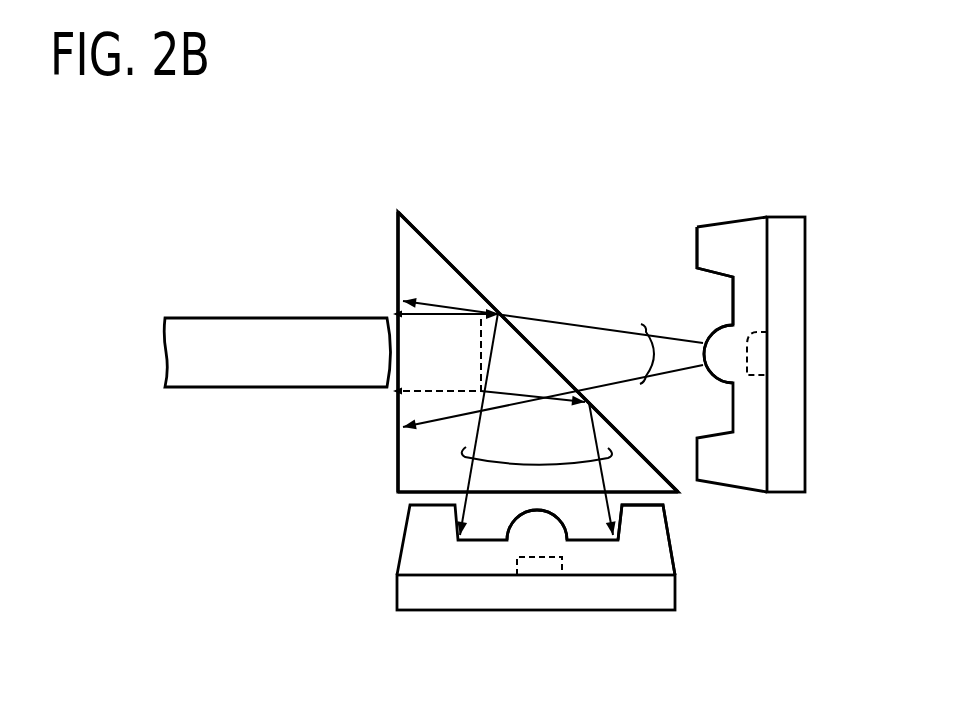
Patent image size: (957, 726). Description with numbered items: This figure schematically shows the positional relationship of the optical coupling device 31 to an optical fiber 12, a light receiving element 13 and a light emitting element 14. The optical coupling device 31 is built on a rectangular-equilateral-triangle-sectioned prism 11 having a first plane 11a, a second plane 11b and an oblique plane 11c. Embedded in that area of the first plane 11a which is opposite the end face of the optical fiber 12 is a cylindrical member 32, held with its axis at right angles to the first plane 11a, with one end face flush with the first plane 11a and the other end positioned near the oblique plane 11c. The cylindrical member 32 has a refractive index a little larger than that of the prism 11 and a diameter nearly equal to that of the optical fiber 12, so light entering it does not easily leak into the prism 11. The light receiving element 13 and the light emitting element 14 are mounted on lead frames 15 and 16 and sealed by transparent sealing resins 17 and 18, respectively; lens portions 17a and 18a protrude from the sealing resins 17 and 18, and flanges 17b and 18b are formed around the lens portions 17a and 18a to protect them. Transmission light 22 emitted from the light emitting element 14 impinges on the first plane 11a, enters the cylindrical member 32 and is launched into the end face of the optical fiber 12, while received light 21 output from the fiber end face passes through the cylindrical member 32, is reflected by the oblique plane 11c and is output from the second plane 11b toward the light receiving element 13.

The prism 11 is at (420, 452).
The first plane 11a is at (397, 255).
The second plane 11b is at (400, 495).
The oblique plane 11c is at (462, 267).
The optical fiber 12 is at (235, 318).
The light receiving element 13 is at (560, 558).
The light emitting element 14 is at (767, 312).
The lead frame 15 is at (675, 590).
The lead frame 16 is at (786, 217).
The transparent sealing resin 17 is at (672, 543).
The lens portion 17a is at (516, 509).
The flange 17b is at (670, 518).
The transparent sealing resin 18 is at (747, 217).
The lens portion 18a is at (712, 325).
The flange 18b is at (717, 223).
The received light 21 is at (615, 458).
The transmission light 22 is at (649, 322).
The optical coupling device 31 is at (438, 223).
The cylindrical member 32 is at (438, 375).